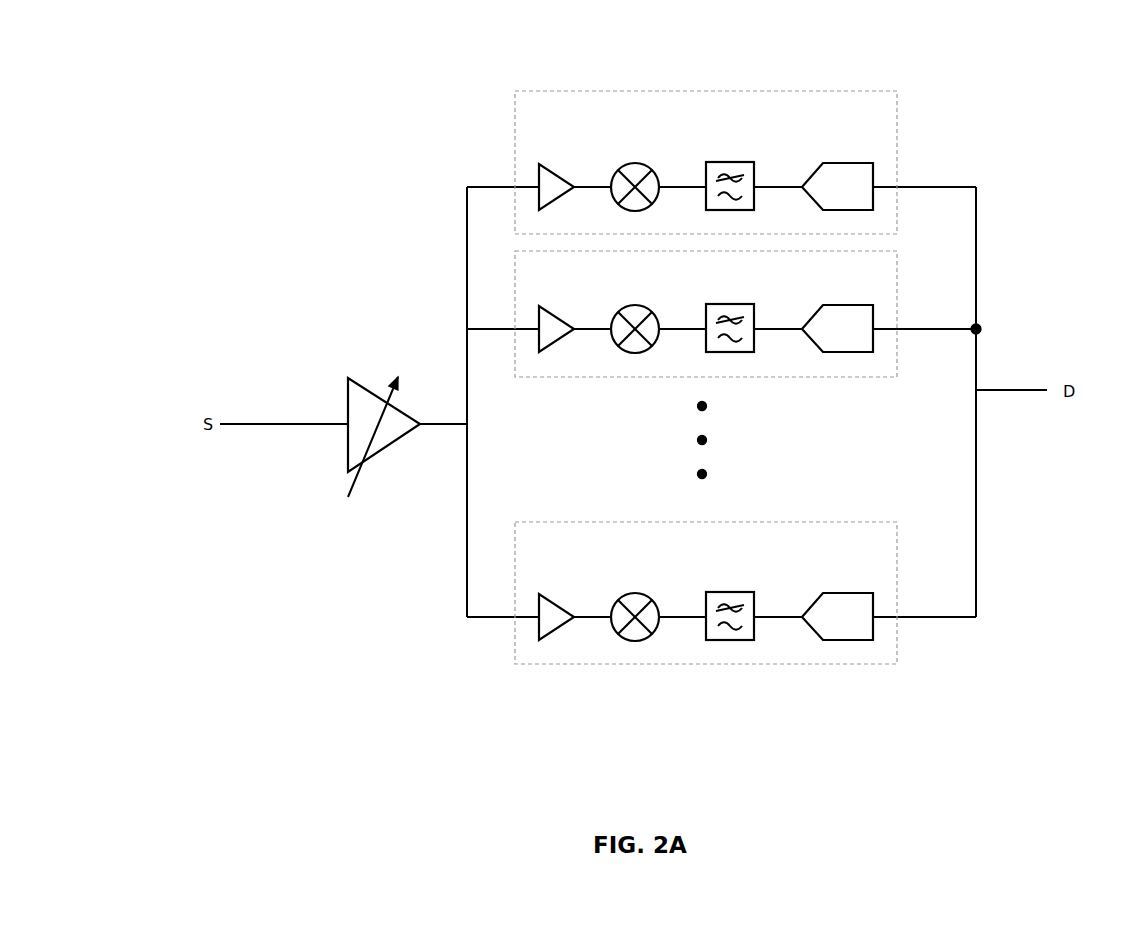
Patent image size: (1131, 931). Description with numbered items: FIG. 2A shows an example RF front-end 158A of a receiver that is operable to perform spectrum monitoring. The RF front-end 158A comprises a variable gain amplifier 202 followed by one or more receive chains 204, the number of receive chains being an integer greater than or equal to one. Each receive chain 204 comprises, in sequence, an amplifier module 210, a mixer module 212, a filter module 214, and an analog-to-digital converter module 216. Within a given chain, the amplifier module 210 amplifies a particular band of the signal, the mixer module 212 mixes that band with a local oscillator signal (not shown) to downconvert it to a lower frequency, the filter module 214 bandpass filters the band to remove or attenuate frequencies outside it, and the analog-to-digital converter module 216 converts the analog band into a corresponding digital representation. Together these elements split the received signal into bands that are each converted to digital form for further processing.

The RF front-end 158A is at (189, 111).
The variable gain amplifier 202 is at (387, 450).
The receive chain 204 is at (897, 143).
The amplifier module 210 is at (553, 157).
The mixer module 212 is at (642, 154).
The filter module 214 is at (729, 154).
The analog-to-digital converter module 216 is at (833, 163).